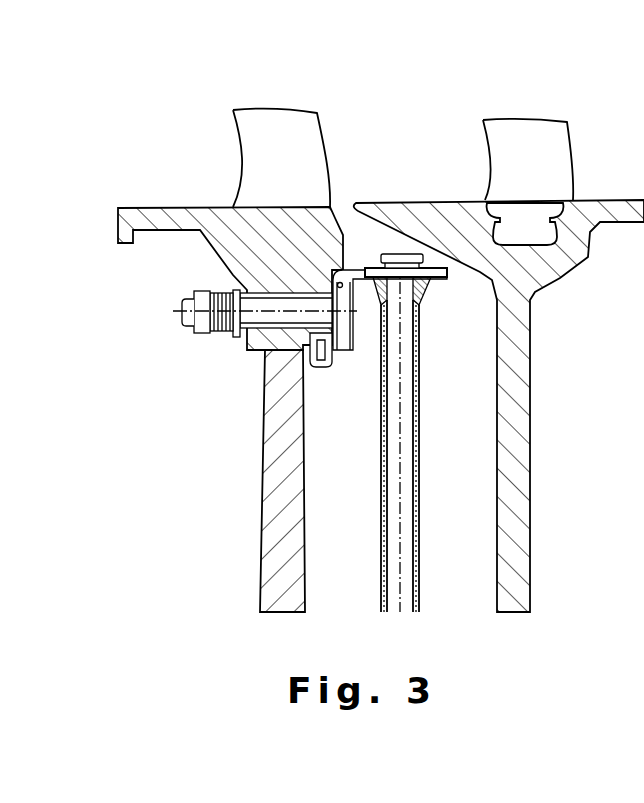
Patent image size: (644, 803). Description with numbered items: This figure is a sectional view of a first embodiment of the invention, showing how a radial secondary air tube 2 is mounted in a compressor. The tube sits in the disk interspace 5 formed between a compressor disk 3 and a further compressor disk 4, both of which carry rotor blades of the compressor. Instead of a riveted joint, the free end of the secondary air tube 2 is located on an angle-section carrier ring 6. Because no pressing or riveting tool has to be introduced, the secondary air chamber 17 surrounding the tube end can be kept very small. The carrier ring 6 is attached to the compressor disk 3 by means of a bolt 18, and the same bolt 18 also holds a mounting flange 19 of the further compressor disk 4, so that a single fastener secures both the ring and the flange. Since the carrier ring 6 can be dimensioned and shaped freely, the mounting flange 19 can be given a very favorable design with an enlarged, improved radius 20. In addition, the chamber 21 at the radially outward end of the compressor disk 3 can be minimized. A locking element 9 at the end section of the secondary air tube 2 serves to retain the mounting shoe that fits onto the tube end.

The secondary air tube 2 is at (418, 470).
The compressor disk 3 is at (285, 598).
The further compressor disk 4 is at (507, 587).
The disk interspace 5 is at (450, 523).
The angle-section carrier ring 6 is at (352, 278).
The locking element 9 is at (443, 283).
The secondary air chamber 17 is at (403, 233).
The bolt 18 is at (285, 320).
The mounting flange 19 is at (305, 250).
The radius 20 is at (450, 263).
The chamber 21 is at (227, 233).